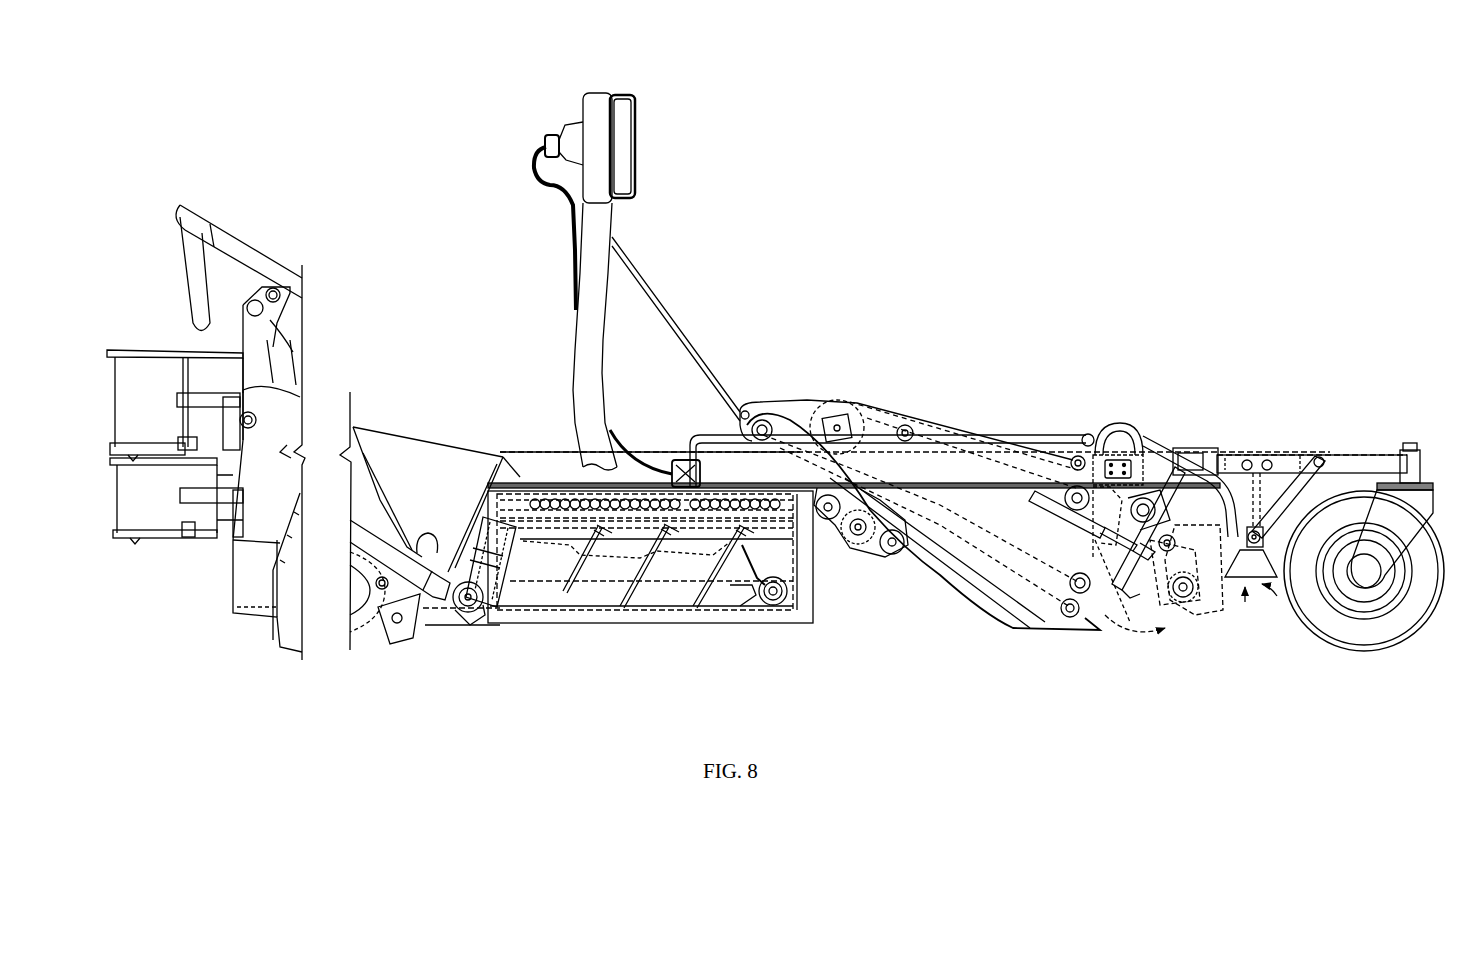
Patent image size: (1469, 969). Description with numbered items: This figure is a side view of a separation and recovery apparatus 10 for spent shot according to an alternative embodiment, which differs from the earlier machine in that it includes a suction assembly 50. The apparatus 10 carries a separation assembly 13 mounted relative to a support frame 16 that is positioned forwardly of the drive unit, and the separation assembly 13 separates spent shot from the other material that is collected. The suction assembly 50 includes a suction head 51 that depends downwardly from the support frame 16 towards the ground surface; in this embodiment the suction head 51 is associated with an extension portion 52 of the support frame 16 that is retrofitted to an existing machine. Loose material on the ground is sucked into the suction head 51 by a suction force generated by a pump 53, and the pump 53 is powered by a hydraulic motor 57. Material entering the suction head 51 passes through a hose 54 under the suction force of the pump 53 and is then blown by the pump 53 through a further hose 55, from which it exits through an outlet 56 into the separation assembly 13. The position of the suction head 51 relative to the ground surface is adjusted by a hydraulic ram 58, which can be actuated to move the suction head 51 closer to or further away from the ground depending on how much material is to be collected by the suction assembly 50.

The separation and recovery apparatus 10 is at (804, 262).
The separation assembly 13 is at (576, 590).
The support frame 16 is at (1074, 470).
The suction assembly 50 is at (1085, 392).
The suction head 51 is at (1260, 600).
The extension portion 52 is at (1294, 446).
The pump 53 is at (1131, 415).
The hose 54 is at (1212, 510).
The hose 55 is at (1027, 422).
The outlet 56 is at (667, 431).
The hydraulic motor 57 is at (1126, 460).
The hydraulic ram 58 is at (1320, 462).